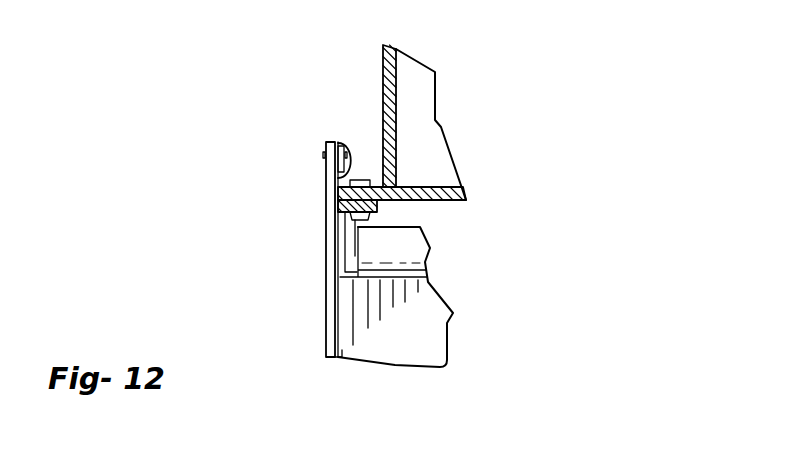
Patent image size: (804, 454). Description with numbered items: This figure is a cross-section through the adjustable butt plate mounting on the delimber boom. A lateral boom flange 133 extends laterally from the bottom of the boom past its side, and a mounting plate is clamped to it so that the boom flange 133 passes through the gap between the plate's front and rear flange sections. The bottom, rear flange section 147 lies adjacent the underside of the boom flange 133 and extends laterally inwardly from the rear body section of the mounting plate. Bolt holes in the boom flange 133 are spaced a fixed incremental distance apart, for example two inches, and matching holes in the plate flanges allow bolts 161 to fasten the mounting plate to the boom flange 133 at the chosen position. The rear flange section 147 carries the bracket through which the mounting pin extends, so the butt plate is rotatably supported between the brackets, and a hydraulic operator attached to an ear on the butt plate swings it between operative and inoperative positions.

The lateral boom flange 133 is at (378, 187).
The bottom rear flange section 147 is at (383, 206).
The bolt 161 is at (326, 177).